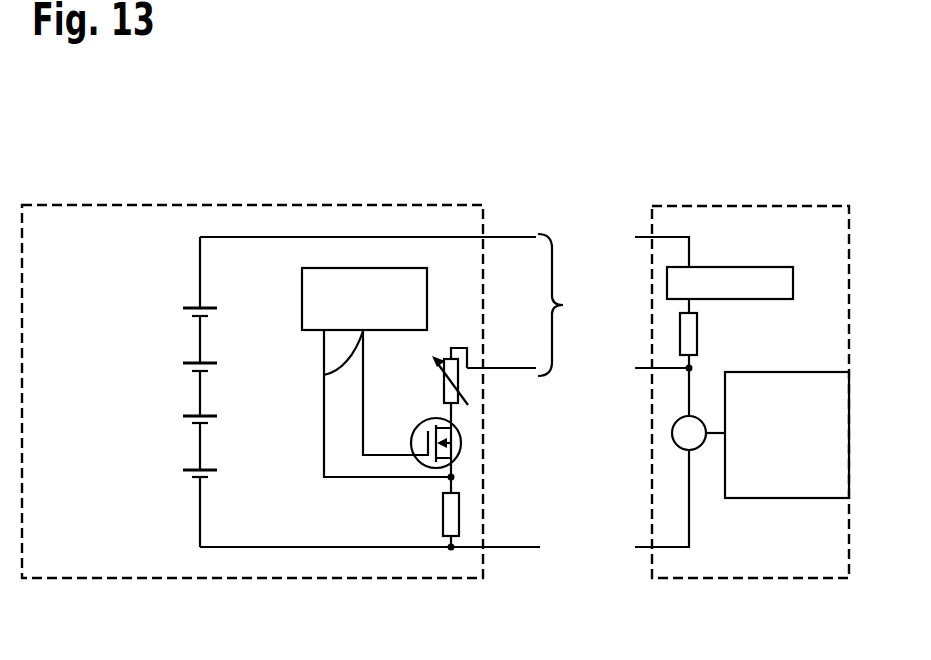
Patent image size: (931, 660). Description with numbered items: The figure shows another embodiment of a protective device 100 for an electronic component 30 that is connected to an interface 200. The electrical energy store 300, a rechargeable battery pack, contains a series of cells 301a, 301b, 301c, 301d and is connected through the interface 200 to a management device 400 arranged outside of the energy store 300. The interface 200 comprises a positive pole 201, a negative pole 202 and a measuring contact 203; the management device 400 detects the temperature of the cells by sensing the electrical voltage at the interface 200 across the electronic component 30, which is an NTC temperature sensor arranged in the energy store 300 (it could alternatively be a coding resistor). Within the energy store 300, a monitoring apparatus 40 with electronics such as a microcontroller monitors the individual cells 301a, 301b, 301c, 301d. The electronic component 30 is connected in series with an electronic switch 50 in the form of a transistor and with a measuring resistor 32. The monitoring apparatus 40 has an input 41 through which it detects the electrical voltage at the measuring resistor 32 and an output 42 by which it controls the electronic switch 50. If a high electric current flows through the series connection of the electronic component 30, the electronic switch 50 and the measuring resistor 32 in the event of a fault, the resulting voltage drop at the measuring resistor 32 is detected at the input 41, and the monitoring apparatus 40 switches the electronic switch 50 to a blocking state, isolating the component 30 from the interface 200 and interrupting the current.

The protective device 100 is at (110, 142).
The electrical energy store 300 is at (245, 204).
The management device 400 is at (752, 205).
The interface 200 is at (539, 394).
The positive pole 201 is at (522, 232).
The negative pole 202 is at (522, 553).
The measuring contact 203 is at (522, 376).
The cell 301a is at (162, 308).
The cell 301b is at (162, 363).
The cell 301c is at (162, 416).
The cell 301d is at (162, 470).
The monitoring apparatus 40 is at (302, 293).
The input 41 is at (323, 335).
The output 42 is at (324, 375).
The electronic component 30 is at (442, 384).
The electronic switch 50 is at (442, 420).
The measuring resistor 32 is at (442, 516).